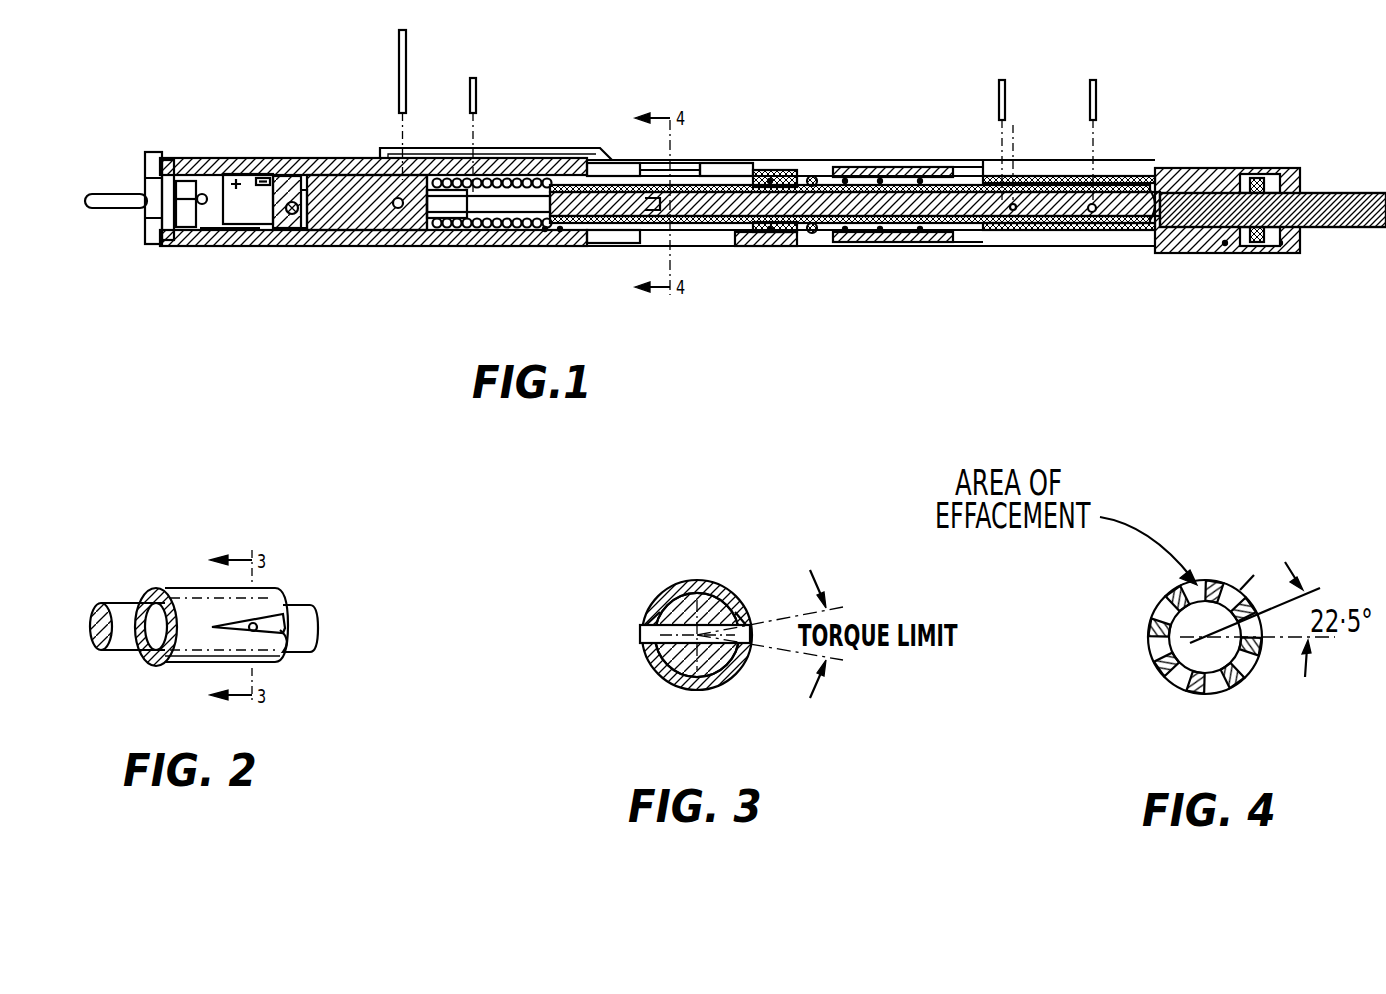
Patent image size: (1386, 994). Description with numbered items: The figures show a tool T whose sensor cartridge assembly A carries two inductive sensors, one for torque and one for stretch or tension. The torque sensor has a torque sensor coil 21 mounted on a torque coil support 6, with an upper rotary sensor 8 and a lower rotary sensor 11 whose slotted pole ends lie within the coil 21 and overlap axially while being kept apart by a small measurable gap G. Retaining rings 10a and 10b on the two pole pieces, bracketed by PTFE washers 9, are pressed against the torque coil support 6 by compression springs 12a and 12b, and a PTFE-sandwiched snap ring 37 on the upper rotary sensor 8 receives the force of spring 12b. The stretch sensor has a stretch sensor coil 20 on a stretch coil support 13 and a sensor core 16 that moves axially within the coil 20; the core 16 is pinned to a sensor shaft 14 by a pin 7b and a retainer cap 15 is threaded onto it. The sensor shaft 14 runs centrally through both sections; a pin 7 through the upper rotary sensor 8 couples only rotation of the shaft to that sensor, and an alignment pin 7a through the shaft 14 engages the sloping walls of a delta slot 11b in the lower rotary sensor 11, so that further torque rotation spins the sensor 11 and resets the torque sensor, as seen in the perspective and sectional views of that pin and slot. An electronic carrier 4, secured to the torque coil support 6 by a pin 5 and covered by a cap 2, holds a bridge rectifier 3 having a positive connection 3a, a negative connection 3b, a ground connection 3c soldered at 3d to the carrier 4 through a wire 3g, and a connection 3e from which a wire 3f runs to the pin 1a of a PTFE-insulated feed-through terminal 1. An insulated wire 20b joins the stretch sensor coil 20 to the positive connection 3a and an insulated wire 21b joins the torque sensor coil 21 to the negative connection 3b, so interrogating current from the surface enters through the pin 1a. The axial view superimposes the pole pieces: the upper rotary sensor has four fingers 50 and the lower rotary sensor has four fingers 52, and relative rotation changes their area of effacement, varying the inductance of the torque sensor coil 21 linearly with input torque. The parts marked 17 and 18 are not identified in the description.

In FIG. 1, the feed through terminal 1 is at (160, 192).
In FIG. 1, the pin 1a is at (203, 190).
In FIG. 1, the cap 2 is at (216, 158).
In FIG. 1, the bridge rectifier 3 is at (268, 176).
In FIG. 1, the positive connection 3a is at (243, 174).
In FIG. 1, the negative connection 3b is at (264, 176).
In FIG. 1, the ground connection 3c is at (268, 243).
In FIG. 1, the solder point 3d is at (300, 213).
In FIG. 1, the connection 3e is at (237, 234).
In FIG. 1, the wire 3f is at (203, 226).
In FIG. 1, the wire 3g is at (294, 221).
In FIG. 1, the electronic carrier 4 is at (347, 200).
In FIG. 1, the pin 5 is at (407, 71).
In FIG. 1, the torque coil support 6 is at (452, 248).
In FIG. 1, the pin 7 is at (477, 104).
In FIG. 1, the alignment pin 7a is at (1028, 89).
In FIG. 2, the alignment pin 7a is at (278, 626).
In FIG. 3, the alignment pin 7a is at (741, 629).
In FIG. 1, the pin 7b is at (1116, 91).
In FIG. 1, the upper rotary sensor 8 is at (636, 179).
In FIG. 4, the upper rotary sensor 8 is at (1246, 596).
In FIG. 1, the washers 9 is at (553, 234).
In FIG. 1, the retaining ring 10a is at (558, 179).
In FIG. 1, the retaining ring 10b is at (818, 181).
In FIG. 1, the lower rotary sensor 11 is at (741, 181).
In FIG. 2, the lower rotary sensor 11 is at (200, 656).
In FIG. 3, the lower rotary sensor 11 is at (666, 673).
In FIG. 4, the lower rotary sensor 11 is at (1253, 666).
In FIG. 2, the delta slot 11b is at (291, 641).
In FIG. 3, the delta slot 11b is at (640, 634).
In FIG. 1, the compression spring 12a is at (500, 229).
In FIG. 1, the compression spring 12b is at (880, 186).
In FIG. 1, the stretch coil support 13 is at (923, 173).
In FIG. 1, the sensor shaft 14 is at (1110, 213).
In FIG. 2, the sensor shaft 14 is at (312, 628).
In FIG. 3, the sensor shaft 14 is at (681, 616).
In FIG. 1, the retainer cap 15 is at (1273, 170).
In FIG. 1, the sensor core 16 is at (1352, 206).
In FIG. 1, the seal 17 is at (1258, 248).
In FIG. 1, the switch rod 18 is at (120, 205).
In FIG. 1, the stretch sensor coil 20 is at (1042, 250).
In FIG. 1, the insulated wire 20b is at (808, 161).
In FIG. 1, the torque sensor coil 21 is at (700, 248).
In FIG. 1, the insulated wire 21b is at (514, 150).
In FIG. 1, the snap ring 37 is at (810, 195).
In FIG. 4, the fingers 50 is at (1163, 670).
In FIG. 4, the fingers 52 is at (1200, 690).
In FIG. 1, the gap G is at (657, 206).
In FIG. 1, the tool T is at (921, 250).
In FIG. 1, the sensor cartridge assembly A is at (1318, 230).